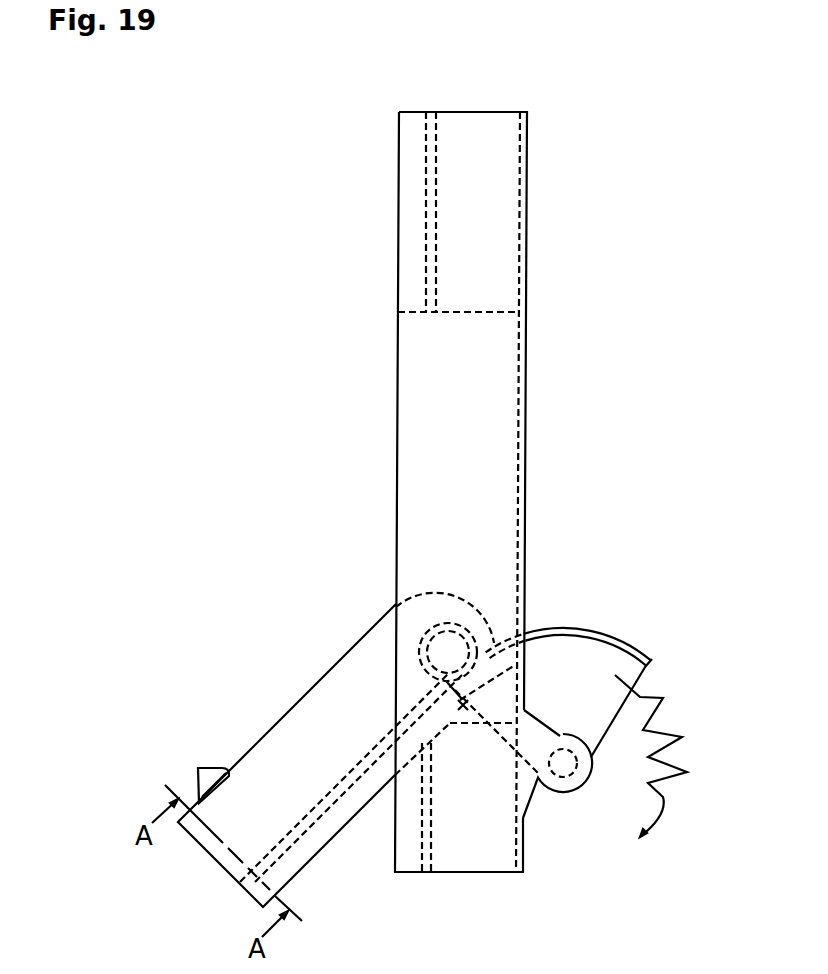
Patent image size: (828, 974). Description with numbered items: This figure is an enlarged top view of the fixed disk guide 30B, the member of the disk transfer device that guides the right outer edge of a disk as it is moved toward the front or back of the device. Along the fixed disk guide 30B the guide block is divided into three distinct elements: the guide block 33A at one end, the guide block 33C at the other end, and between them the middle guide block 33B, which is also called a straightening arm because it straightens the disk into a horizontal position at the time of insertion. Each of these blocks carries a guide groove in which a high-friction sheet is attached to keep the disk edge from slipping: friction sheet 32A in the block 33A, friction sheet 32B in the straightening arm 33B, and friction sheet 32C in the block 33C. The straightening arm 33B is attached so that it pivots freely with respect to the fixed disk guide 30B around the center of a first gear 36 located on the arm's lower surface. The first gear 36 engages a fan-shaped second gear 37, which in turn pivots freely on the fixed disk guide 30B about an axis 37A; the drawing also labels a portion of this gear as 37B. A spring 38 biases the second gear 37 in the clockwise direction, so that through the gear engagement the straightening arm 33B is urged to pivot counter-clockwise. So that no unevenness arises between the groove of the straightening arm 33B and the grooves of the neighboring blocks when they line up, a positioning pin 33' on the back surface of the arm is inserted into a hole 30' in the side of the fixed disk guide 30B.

The hole 30' is at (558, 492).
The fixed disk guide 30B is at (497, 480).
The guide block 33C is at (468, 212).
The friction sheet 32C is at (432, 235).
The guide block 33A is at (465, 852).
The friction sheet 32A is at (425, 847).
The straightening arm 33B is at (327, 708).
The friction sheet 32B is at (327, 797).
The positioning pin 33' is at (182, 760).
The first gear 36 is at (430, 638).
The second gear 37 is at (558, 662).
The axis 37A is at (567, 750).
The bracket end 37B is at (652, 672).
The spring 38 is at (682, 737).